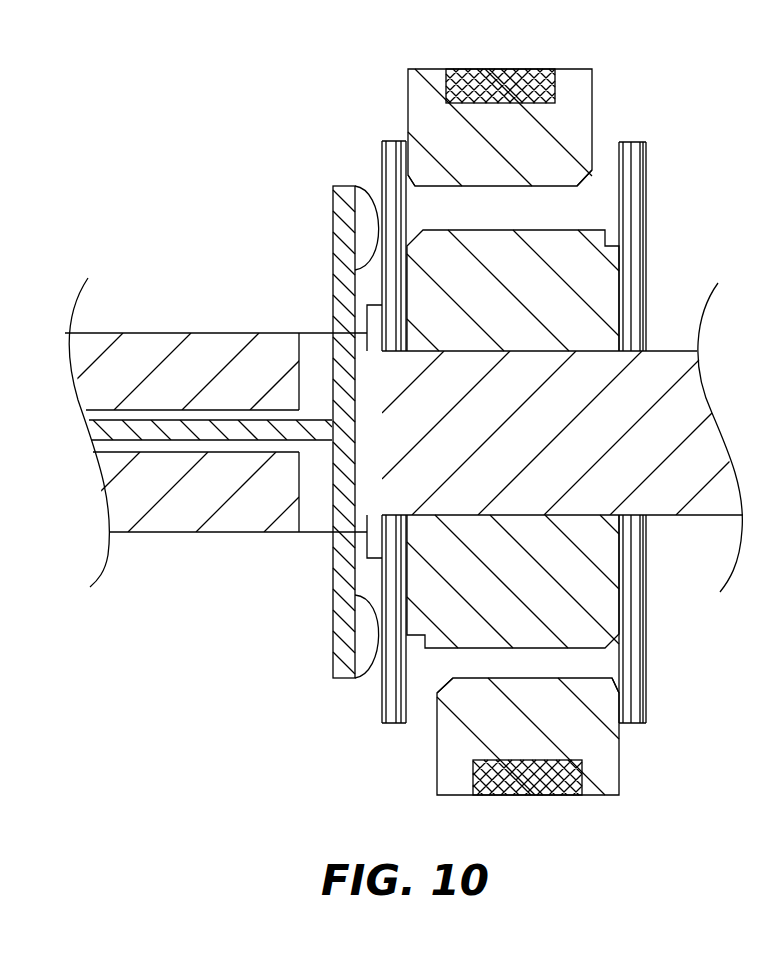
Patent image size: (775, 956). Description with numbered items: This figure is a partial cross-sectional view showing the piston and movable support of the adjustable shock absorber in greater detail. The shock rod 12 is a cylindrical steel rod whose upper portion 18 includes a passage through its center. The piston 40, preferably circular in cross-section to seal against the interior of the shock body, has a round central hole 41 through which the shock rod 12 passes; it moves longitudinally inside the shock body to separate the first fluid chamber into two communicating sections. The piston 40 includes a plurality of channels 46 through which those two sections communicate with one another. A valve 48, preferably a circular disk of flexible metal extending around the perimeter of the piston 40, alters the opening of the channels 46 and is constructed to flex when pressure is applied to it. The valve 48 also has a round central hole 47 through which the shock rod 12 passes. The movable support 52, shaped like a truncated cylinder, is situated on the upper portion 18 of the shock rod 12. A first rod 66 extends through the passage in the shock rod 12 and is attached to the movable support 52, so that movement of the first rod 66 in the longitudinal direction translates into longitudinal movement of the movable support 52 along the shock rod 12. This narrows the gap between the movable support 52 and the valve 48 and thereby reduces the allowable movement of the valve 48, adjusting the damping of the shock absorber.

The shock rod 12 is at (128, 332).
The upper portion 18 is at (257, 517).
The first rod 66 is at (185, 430).
The movable support 52 is at (343, 191).
The round central hole 47 is at (398, 518).
The valve 48 is at (396, 147).
The round central hole 41 is at (577, 351).
The piston 40 is at (570, 78).
The channels 46 is at (557, 205).